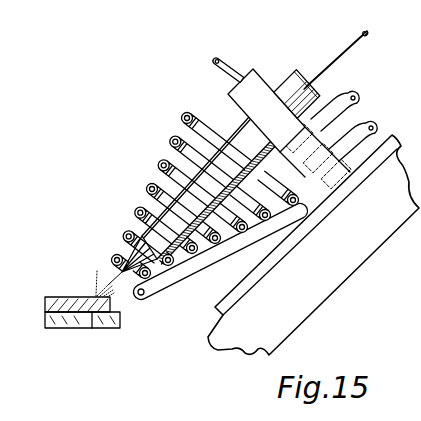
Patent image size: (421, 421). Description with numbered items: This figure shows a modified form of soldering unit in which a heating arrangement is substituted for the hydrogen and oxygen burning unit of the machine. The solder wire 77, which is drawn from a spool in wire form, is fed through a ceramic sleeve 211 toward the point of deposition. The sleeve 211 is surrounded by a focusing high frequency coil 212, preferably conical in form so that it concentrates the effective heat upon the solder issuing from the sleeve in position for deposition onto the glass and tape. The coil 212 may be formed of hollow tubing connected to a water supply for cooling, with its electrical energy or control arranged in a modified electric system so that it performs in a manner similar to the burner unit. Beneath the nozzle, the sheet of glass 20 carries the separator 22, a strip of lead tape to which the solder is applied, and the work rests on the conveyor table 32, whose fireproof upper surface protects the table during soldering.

The solder wire 77 is at (335, 62).
The ceramic sleeve 211 is at (244, 147).
The focusing high frequency coil 212 is at (137, 238).
The sheet of glass 20 is at (63, 299).
The separator 22 is at (96, 272).
The conveyor table 32 is at (95, 329).